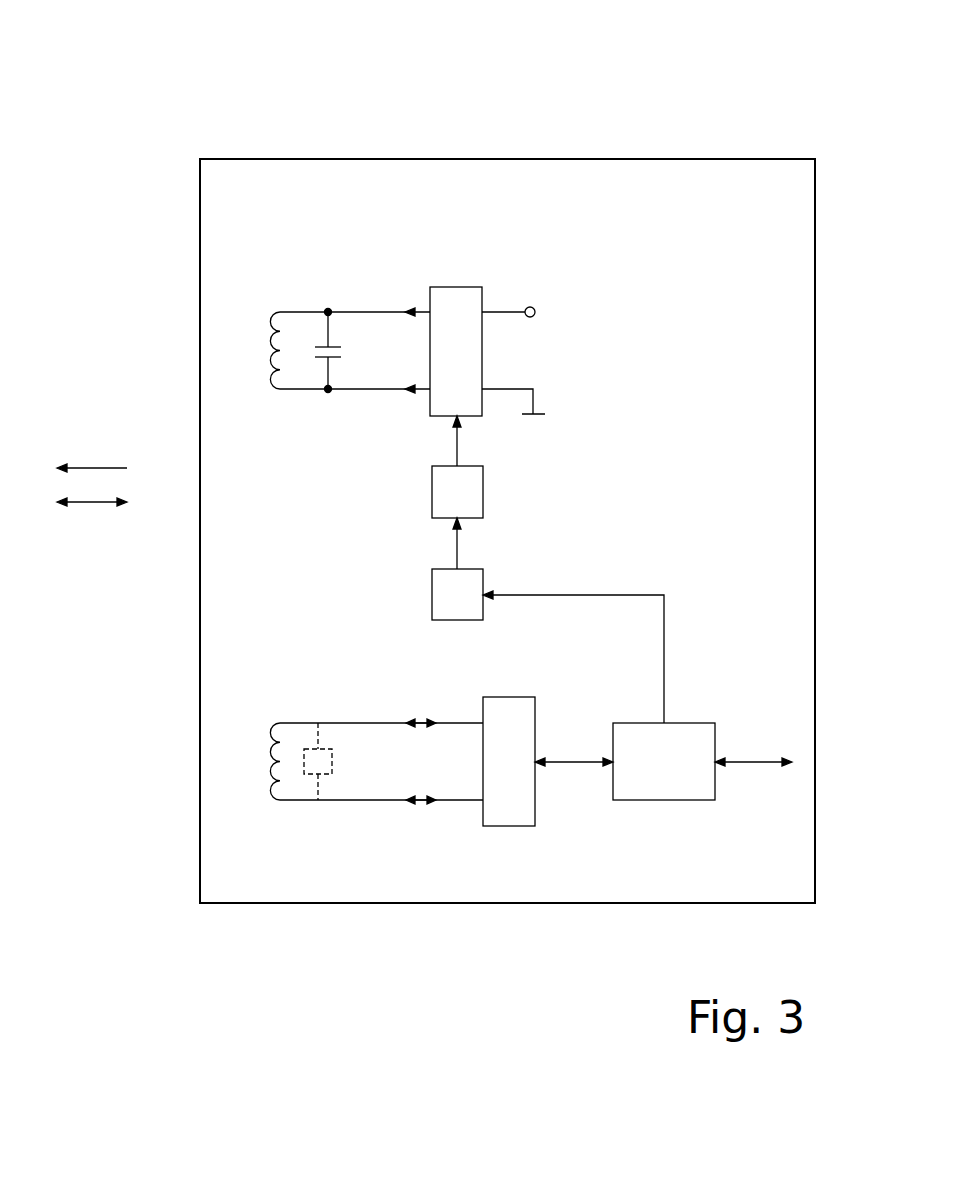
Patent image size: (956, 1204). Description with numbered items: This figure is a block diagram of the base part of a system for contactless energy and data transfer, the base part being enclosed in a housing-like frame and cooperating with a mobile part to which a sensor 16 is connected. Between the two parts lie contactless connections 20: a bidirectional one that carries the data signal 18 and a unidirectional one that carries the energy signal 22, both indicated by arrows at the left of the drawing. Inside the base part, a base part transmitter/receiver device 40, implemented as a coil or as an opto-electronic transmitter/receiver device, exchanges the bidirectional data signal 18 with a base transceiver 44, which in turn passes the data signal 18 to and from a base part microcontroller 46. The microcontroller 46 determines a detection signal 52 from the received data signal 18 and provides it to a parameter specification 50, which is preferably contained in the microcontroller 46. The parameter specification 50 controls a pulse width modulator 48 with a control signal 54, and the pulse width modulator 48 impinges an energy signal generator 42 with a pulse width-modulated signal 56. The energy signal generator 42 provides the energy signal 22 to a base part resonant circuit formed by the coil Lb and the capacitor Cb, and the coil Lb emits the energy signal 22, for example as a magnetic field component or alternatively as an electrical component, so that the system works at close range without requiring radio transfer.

The sensor 16 is at (597, 159).
The data signal 18 is at (122, 506).
The contactless connections 20 is at (75, 405).
The energy signal 22 is at (112, 468).
The base part transmitter/receiver device 40 is at (295, 730).
The energy signal generator 42 is at (463, 287).
The base transceiver 44 is at (535, 722).
The base part microcontroller 46 is at (690, 722).
The pulse width modulator 48 is at (483, 486).
The parameter specification 50 is at (483, 577).
The detection signal 52 is at (664, 609).
The control signal 54 is at (455, 523).
The pulse width-modulated signal 56 is at (456, 420).